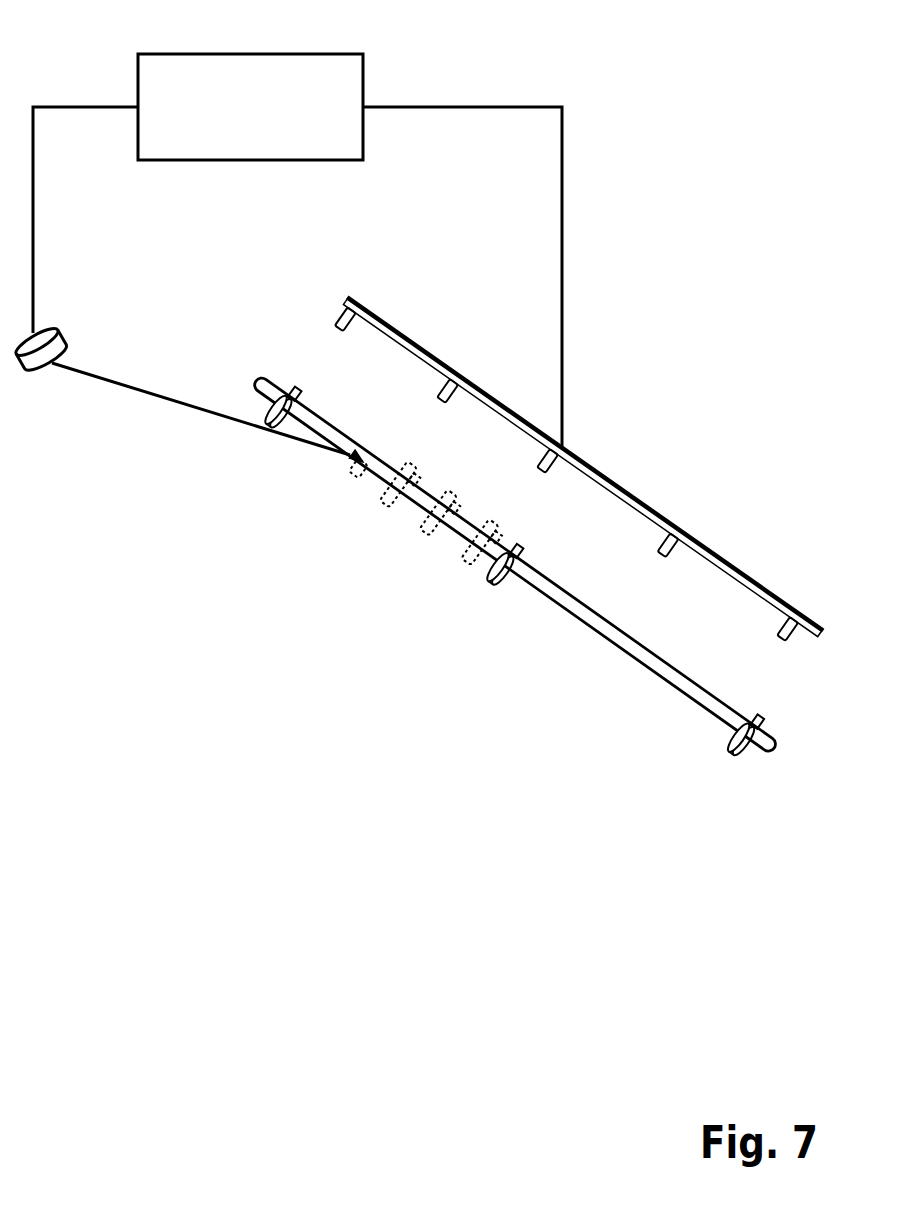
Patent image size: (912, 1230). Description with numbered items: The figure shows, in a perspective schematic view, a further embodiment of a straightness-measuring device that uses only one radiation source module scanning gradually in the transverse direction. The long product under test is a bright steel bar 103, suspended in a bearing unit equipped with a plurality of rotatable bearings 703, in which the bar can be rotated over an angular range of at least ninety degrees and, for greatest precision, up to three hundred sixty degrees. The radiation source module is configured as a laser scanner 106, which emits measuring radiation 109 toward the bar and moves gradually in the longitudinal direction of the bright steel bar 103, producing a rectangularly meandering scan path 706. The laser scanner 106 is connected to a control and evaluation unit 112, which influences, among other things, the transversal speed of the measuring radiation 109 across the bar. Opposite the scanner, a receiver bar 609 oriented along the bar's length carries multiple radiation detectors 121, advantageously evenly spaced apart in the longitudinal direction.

The bright steel bar 103 is at (634, 650).
The laser scanner 106 is at (32, 360).
The measuring radiation 109 is at (188, 407).
The control and evaluation unit 112 is at (276, 119).
The radiation detectors 121 is at (338, 316).
The receiver bar 609 is at (408, 338).
The rotatable bearings 703 is at (255, 408).
The rectangularly meandering scan path 706 is at (403, 502).